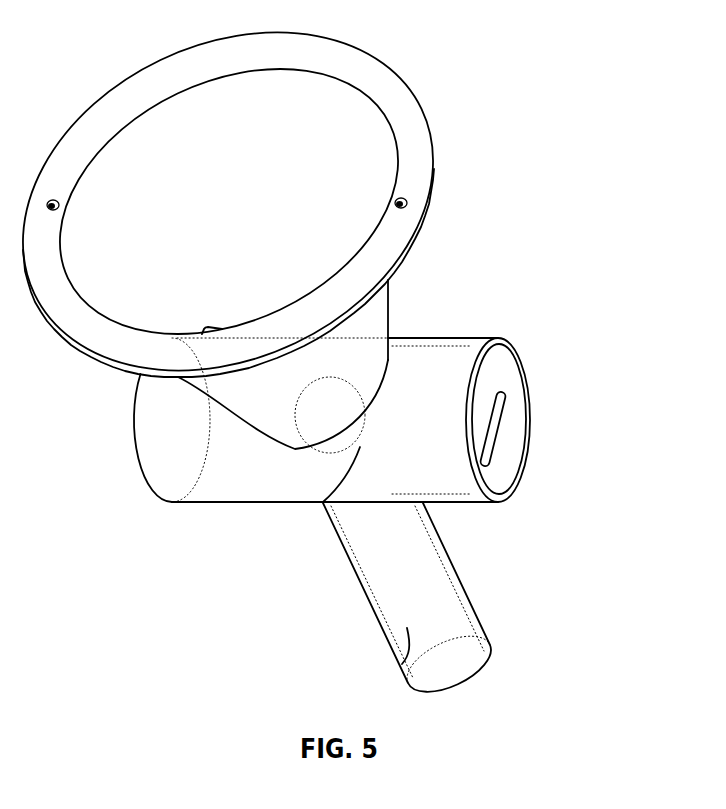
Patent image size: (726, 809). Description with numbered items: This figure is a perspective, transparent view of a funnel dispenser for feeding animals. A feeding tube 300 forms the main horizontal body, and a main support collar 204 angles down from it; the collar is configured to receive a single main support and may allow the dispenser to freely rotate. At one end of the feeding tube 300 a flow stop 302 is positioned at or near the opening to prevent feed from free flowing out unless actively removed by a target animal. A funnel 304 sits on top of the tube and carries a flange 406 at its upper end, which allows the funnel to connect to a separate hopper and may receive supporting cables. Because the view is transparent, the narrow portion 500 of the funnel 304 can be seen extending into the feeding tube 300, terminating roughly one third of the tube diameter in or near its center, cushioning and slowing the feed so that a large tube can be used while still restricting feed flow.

The main support collar 204 is at (403, 664).
The feeding tube 300 is at (183, 478).
The flow stop 302 is at (496, 418).
The funnel 304 is at (383, 303).
The flange 406 is at (125, 108).
The narrow portion 500 is at (323, 504).